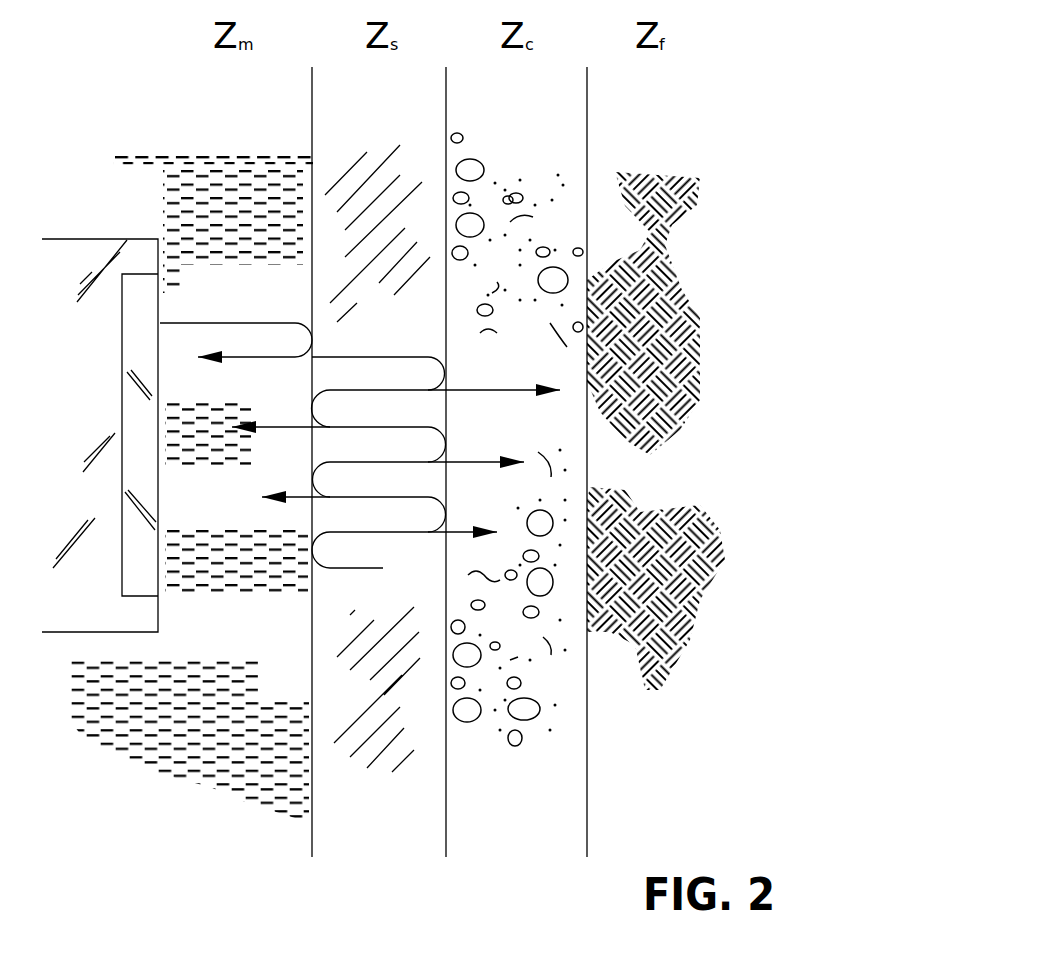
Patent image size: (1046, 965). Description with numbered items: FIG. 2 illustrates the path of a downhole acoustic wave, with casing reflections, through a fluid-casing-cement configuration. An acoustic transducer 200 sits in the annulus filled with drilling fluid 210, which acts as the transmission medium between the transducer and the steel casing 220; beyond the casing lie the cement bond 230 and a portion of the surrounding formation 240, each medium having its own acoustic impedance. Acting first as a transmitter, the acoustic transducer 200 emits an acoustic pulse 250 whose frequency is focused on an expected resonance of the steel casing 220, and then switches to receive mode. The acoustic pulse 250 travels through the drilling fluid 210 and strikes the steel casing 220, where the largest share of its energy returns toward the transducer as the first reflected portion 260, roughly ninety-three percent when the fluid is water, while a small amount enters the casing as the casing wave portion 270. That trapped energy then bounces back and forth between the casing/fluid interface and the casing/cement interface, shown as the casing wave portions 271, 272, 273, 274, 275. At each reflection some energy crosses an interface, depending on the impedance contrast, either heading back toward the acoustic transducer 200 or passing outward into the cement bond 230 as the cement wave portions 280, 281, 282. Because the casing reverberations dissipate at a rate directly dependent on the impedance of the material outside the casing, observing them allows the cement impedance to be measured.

The acoustic transducer 200 is at (62, 239).
The drilling fluid 210 is at (192, 444).
The steel casing 220 is at (371, 461).
The cement bond 230 is at (514, 461).
The surrounding formation 240 is at (656, 461).
The acoustic pulse 250 is at (193, 322).
The first reflected portion 260 is at (235, 362).
The casing wave portion 270 is at (332, 356).
The casing wave portion 271 is at (348, 390).
The casing wave portion 272 is at (353, 428).
The casing wave portion 273 is at (362, 460).
The casing wave portion 274 is at (358, 496).
The casing wave portion 275 is at (347, 535).
The cement wave portion 280 is at (527, 383).
The cement wave portion 281 is at (487, 448).
The cement wave portion 282 is at (460, 522).